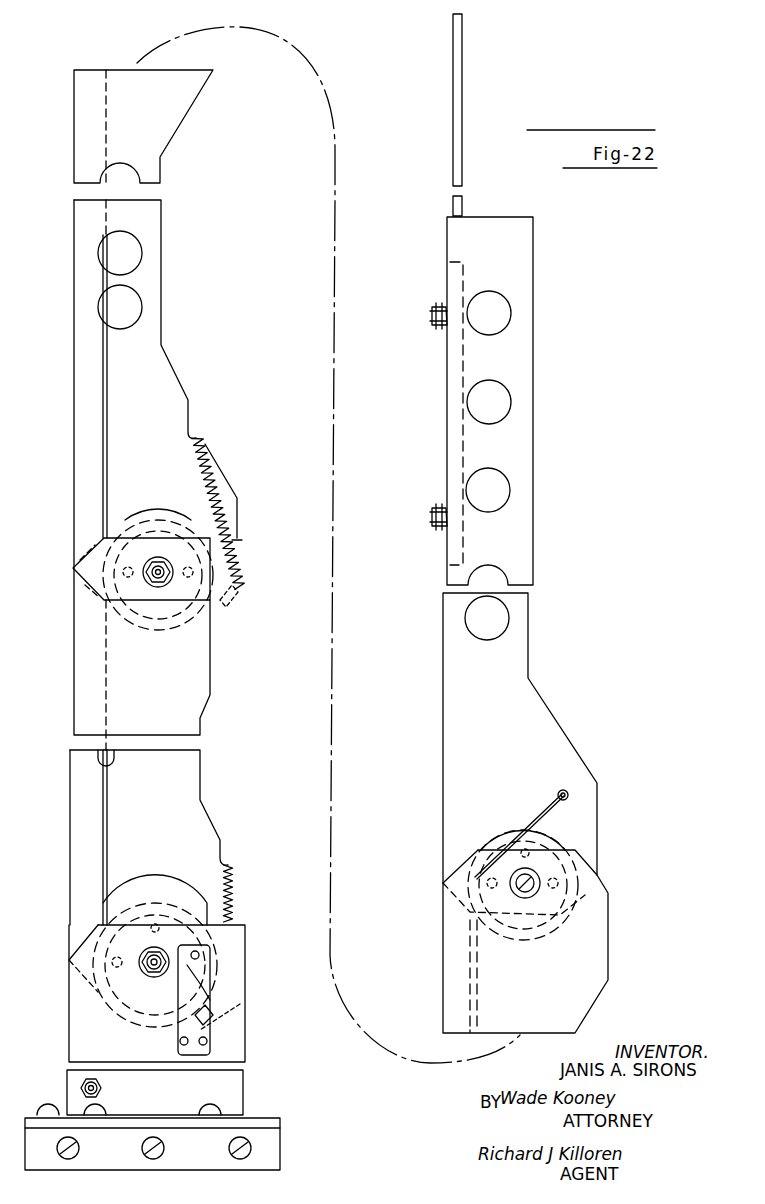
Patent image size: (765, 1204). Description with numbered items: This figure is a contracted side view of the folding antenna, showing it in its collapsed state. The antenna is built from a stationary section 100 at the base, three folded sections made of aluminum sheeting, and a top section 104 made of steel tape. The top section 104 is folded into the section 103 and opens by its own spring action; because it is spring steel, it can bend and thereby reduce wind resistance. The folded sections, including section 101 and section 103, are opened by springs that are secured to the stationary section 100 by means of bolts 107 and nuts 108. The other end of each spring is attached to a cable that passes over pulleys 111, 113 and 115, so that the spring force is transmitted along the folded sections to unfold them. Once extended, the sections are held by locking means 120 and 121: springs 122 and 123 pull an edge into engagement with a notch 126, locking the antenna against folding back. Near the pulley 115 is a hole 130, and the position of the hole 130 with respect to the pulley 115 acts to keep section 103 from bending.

The stationary section 100 is at (245, 1052).
The folded section 101 is at (202, 791).
The folded section 103 is at (530, 455).
The top section 104 is at (462, 73).
The bolt 107 is at (80, 1088).
The nut 108 is at (102, 1090).
The pulley 111 is at (98, 992).
The pulley 113 is at (122, 604).
The pulley 115 is at (487, 895).
The locking means 120 is at (222, 1008).
The locking means 121 is at (226, 600).
The spring 122 is at (233, 892).
The spring 123 is at (241, 562).
The notch 126 is at (237, 540).
The hole 130 is at (568, 790).